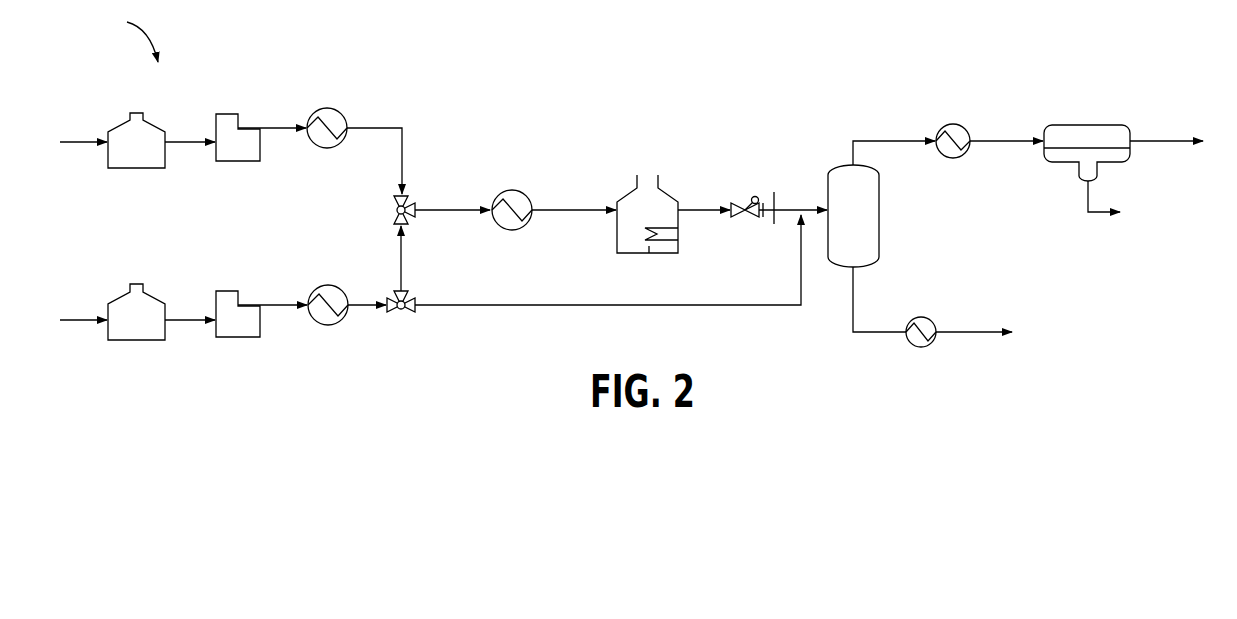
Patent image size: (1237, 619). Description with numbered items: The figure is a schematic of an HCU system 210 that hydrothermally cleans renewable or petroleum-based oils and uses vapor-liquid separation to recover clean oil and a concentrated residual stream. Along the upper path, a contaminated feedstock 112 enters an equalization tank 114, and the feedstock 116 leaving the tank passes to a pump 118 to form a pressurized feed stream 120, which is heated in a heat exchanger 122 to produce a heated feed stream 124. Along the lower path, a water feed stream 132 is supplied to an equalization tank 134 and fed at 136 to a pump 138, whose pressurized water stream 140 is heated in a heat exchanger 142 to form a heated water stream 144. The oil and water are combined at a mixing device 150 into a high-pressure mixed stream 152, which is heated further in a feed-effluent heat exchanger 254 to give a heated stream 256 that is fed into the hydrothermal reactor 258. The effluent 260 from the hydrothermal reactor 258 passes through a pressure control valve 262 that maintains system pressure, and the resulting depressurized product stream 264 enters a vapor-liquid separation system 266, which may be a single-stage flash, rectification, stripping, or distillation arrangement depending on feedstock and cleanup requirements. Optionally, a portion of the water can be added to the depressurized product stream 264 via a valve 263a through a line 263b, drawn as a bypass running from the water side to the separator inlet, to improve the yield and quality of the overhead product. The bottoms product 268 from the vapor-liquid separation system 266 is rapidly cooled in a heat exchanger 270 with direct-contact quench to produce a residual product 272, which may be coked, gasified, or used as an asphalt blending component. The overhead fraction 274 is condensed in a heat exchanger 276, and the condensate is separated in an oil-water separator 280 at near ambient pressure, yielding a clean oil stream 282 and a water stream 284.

The HCU system 210 is at (123, 36).
The contaminated feedstock 112 is at (83, 129).
The equalization tank 114 is at (136, 141).
The feedstock 116 is at (190, 126).
The pump 118 is at (238, 139).
The pressurized feed stream 120 is at (272, 115).
The heat exchanger 122 is at (327, 140).
The heated feed stream 124 is at (392, 161).
The mixing device 150 is at (383, 210).
The high-pressure mixed stream 152 is at (452, 199).
The feed-effluent heat exchanger 254 is at (511, 225).
The heated stream 256 is at (574, 199).
The hydrothermal reactor 258 is at (647, 214).
The effluent 260 is at (704, 199).
The pressure control valve 262 is at (752, 222).
The depressurized product stream 264 is at (793, 200).
The vapor-liquid separation system 266 is at (853, 216).
The bottoms product 268 is at (879, 299).
The heat exchanger 270 is at (919, 343).
The residual product 272 is at (974, 319).
The overhead fraction 274 is at (894, 141).
The heat exchanger 276 is at (989, 136).
The oil-water separator 280 is at (1087, 153).
The clean oil stream 282 is at (1166, 129).
The water stream 284 is at (1102, 213).
The water feed stream 132 is at (83, 336).
The equalization tank 134 is at (136, 312).
The feed to pump 136 is at (190, 336).
The pump 138 is at (238, 314).
The pressurized water stream 140 is at (272, 292).
The heat exchanger 142 is at (347, 319).
The heated water stream 144 is at (419, 258).
The valve 263a is at (403, 314).
The line 263b is at (608, 260).